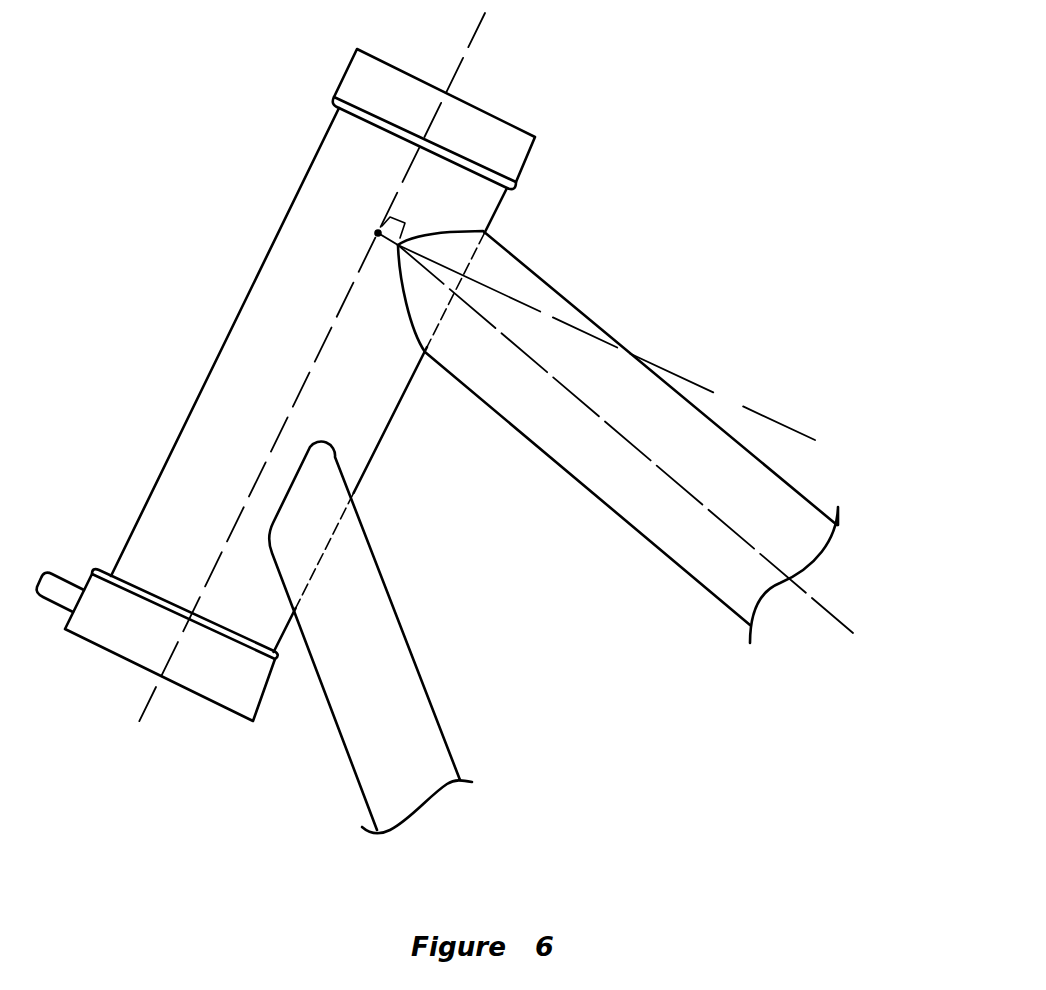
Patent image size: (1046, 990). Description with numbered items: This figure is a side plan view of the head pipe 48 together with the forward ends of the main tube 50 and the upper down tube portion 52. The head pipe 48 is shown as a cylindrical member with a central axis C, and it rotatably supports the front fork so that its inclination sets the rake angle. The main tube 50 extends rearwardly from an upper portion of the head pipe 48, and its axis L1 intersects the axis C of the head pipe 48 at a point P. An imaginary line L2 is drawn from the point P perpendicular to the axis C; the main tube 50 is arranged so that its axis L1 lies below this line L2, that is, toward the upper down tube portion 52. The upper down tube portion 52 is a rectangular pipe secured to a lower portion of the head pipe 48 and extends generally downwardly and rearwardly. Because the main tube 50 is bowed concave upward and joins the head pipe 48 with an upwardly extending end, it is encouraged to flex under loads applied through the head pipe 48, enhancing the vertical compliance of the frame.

The head pipe 48 is at (243, 307).
The main tube 50 is at (553, 288).
The upper down tube portion 52 is at (423, 678).
The point P is at (378, 233).
The axis of the head pipe C is at (468, 50).
The axis of the main tube L1 is at (823, 608).
The imaginary line L2 is at (812, 437).